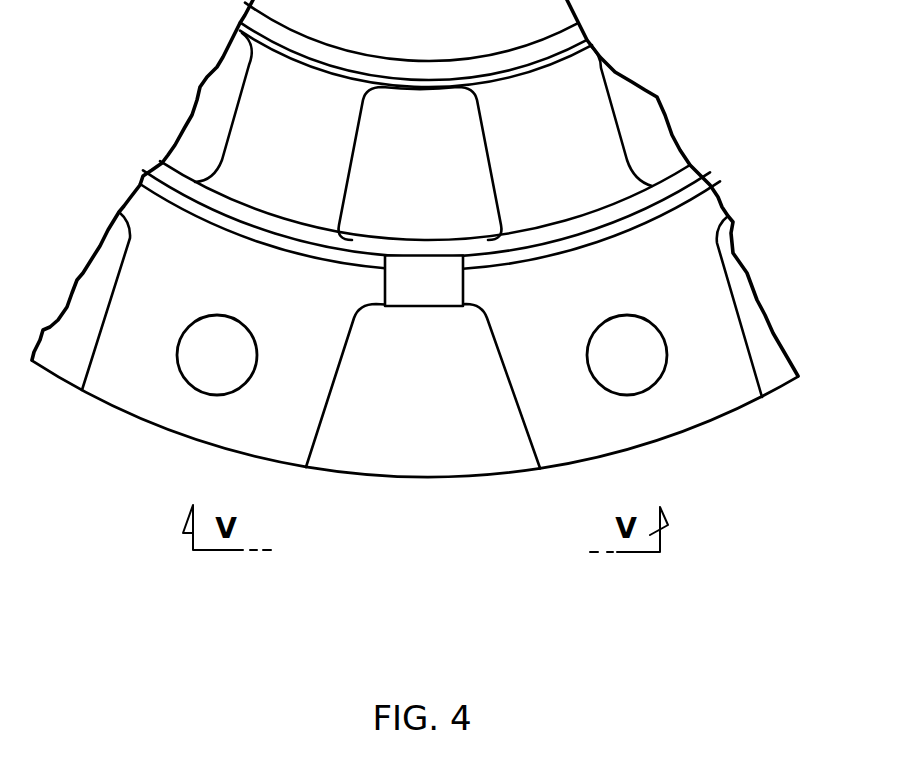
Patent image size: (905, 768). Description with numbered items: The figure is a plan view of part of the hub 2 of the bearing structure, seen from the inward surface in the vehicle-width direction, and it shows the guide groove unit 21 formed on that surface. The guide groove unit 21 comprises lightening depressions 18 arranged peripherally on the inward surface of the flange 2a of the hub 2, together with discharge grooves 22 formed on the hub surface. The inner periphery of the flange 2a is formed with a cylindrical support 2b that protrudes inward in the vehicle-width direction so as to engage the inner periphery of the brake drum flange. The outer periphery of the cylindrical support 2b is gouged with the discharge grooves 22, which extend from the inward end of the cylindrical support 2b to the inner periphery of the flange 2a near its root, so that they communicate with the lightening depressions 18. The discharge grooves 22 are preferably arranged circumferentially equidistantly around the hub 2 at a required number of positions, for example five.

The hub 2 is at (688, 460).
The flange 2a is at (148, 419).
The cylindrical support 2b is at (557, 232).
The lightening depressions 18 is at (65, 355).
The guide groove unit 21 is at (428, 495).
The discharge grooves 22 is at (410, 290).